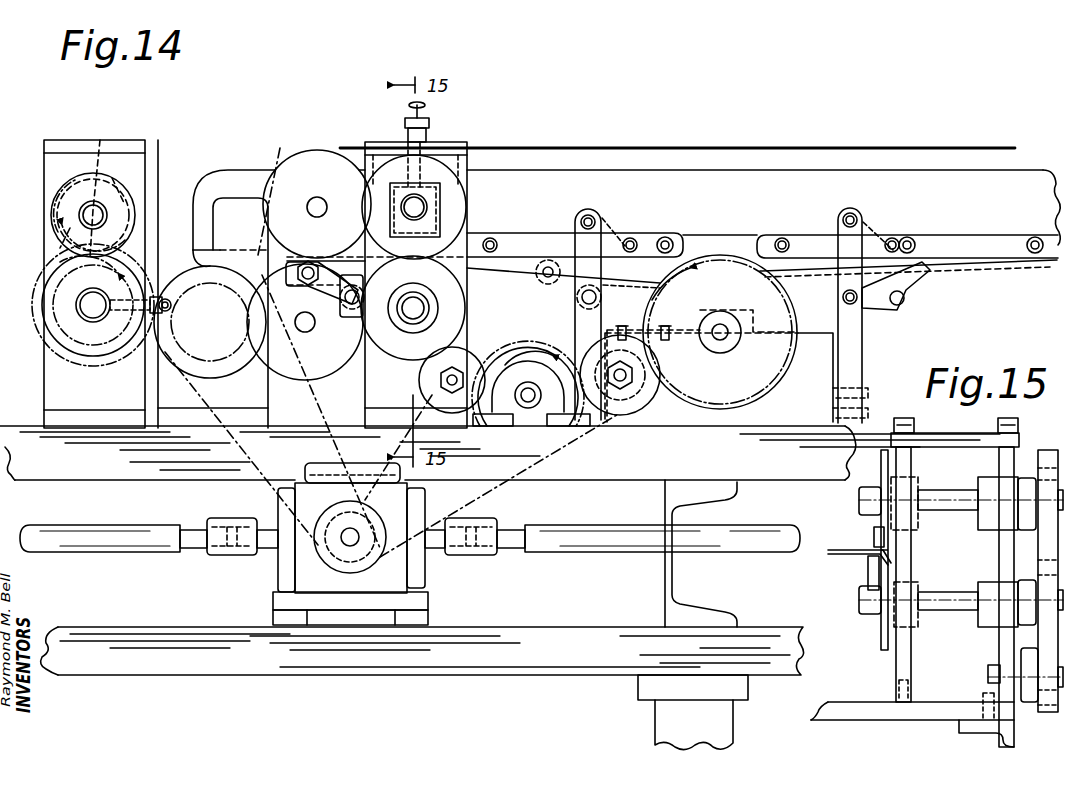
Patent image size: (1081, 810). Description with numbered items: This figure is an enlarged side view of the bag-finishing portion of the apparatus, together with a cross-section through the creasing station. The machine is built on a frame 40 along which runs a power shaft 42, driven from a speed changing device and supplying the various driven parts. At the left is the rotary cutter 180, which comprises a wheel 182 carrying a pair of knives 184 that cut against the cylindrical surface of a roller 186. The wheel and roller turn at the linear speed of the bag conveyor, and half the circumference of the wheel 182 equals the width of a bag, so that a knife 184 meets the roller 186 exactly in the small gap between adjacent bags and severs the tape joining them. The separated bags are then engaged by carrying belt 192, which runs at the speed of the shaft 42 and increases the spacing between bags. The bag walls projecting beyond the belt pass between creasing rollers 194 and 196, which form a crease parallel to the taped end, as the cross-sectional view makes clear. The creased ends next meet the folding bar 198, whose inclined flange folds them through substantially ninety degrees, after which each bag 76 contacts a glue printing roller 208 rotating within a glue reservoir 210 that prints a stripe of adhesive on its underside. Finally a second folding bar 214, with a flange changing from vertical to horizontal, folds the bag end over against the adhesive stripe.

In FIG. 14, the rotary cutter 180 is at (48, 176).
In FIG. 14, the wheel 182 is at (136, 212).
In FIG. 14, the knives 184 is at (96, 186).
In FIG. 14, the roller 186 is at (57, 340).
In FIG. 14, the carrying belt 192 is at (542, 150).
In FIG. 14, the creasing roller 194 is at (457, 199).
In FIG. 15, the creasing roller 194 is at (885, 468).
In FIG. 14, the creasing roller 196 is at (457, 319).
In FIG. 15, the creasing roller 196 is at (881, 637).
In FIG. 14, the folding bar 198 is at (518, 242).
In FIG. 14, the glue printing roller 208 is at (775, 307).
In FIG. 14, the glue reservoir 210 is at (830, 358).
In FIG. 14, the second folding bar 214 is at (944, 239).
In FIG. 14, the frame 40 is at (530, 667).
In FIG. 14, the power shaft 42 is at (65, 543).
In FIG. 15, the paper bag 76 is at (836, 553).